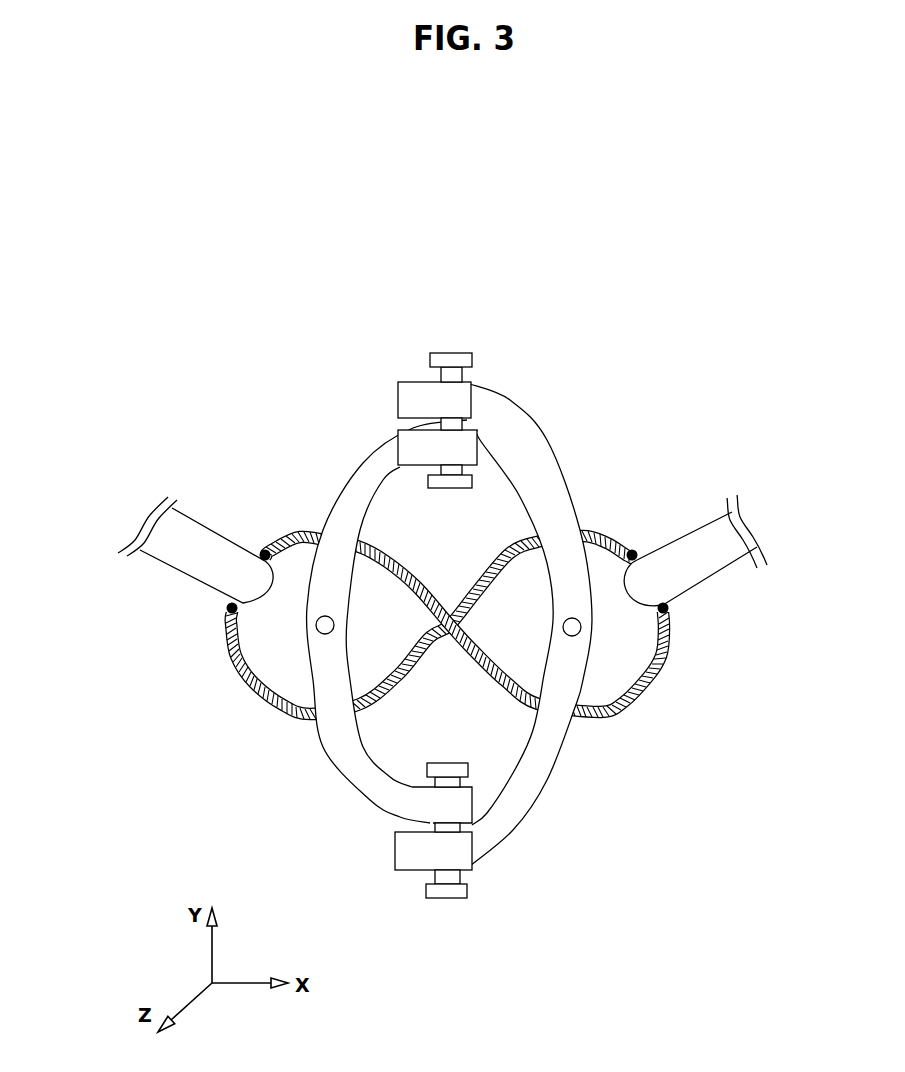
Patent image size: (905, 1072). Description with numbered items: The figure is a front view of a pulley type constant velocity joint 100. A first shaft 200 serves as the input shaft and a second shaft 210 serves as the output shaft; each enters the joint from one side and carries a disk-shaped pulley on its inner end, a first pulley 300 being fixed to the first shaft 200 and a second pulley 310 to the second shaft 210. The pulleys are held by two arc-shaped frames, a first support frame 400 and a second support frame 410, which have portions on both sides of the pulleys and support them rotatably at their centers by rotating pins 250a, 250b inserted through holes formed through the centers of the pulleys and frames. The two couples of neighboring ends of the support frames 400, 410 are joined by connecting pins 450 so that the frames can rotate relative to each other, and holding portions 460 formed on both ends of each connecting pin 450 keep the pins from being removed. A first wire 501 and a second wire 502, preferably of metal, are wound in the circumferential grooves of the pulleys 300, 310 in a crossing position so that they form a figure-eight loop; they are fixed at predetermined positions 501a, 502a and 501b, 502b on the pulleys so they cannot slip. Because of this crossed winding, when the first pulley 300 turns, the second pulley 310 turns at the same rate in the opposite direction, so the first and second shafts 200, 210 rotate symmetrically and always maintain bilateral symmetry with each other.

The pulley type constant velocity joint 100 is at (441, 587).
The first shaft 200 is at (165, 532).
The second shaft 210 is at (757, 535).
The rotating pin 250a is at (323, 632).
The rotating pin 250b is at (645, 695).
The first pulley 300 is at (277, 680).
The second pulley 310 is at (593, 692).
The first support frame 400 is at (402, 808).
The second support frame 410 is at (490, 843).
The connecting pin 450 is at (458, 378).
The holding portion 460 is at (453, 360).
The first wire 501 is at (222, 648).
The fixing position of first wire 501a is at (223, 610).
The fixing position of first wire 501b is at (634, 555).
The second wire 502 is at (670, 668).
The fixing position of second wire 502a is at (260, 550).
The fixing position of second wire 502b is at (677, 607).